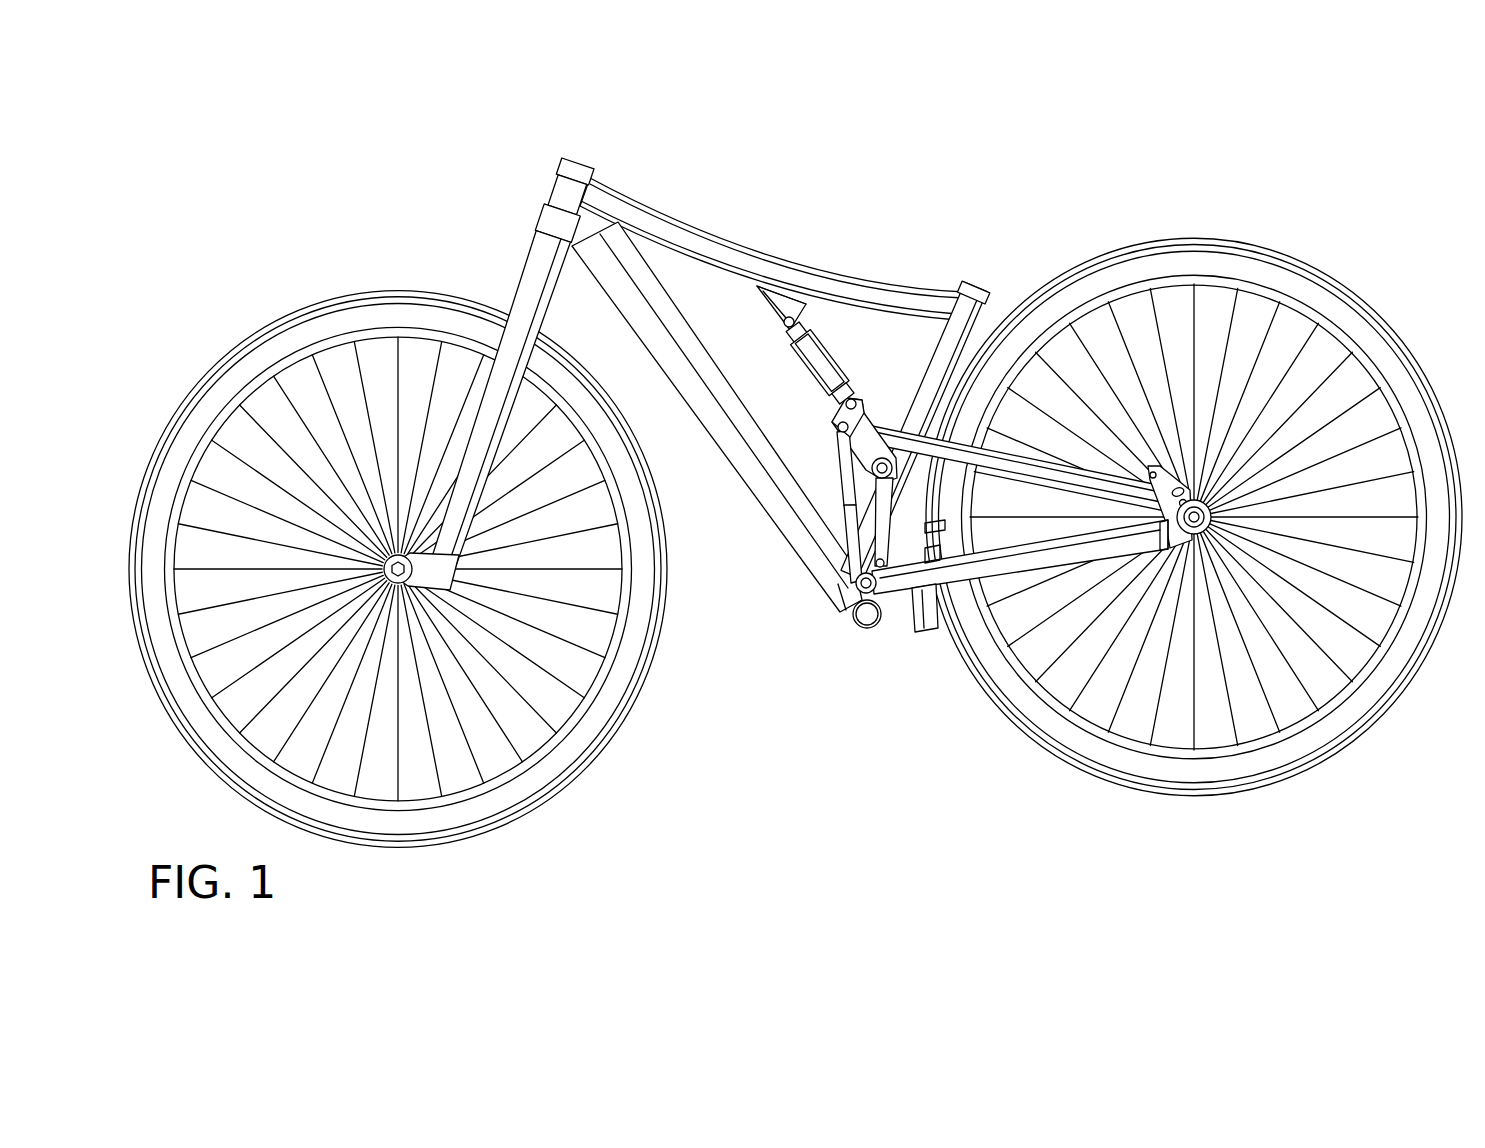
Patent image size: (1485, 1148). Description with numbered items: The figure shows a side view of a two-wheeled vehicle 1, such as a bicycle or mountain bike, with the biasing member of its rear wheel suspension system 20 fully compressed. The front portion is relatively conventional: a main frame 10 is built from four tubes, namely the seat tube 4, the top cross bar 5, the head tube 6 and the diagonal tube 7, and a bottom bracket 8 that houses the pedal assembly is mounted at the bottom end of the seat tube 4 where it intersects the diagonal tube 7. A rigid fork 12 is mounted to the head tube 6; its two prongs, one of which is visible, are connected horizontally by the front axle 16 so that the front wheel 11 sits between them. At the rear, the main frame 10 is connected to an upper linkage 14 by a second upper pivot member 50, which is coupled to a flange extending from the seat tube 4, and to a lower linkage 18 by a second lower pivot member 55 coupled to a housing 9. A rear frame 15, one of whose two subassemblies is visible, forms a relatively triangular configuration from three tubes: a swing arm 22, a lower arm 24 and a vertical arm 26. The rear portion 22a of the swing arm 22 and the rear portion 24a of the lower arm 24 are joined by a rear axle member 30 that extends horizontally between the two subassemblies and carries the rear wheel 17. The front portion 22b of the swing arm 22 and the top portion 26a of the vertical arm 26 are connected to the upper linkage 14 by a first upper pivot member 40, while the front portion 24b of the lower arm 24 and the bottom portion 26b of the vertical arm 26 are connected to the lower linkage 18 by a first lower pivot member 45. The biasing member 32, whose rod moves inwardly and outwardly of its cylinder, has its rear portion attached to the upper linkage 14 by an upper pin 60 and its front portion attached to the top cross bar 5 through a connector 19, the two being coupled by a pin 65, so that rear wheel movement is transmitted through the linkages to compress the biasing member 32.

The two-wheeled vehicle 1 is at (580, 866).
The seat tube 4 is at (975, 282).
The top cross bar 5 is at (662, 212).
The head tube 6 is at (558, 172).
The diagonal tube 7 is at (720, 390).
The bottom bracket 8 is at (857, 642).
The housing 9 is at (838, 584).
The main frame 10 is at (514, 205).
The front wheel 11 is at (508, 775).
The fork 12 is at (520, 292).
The upper linkage 14 is at (824, 404).
The rear frame 15 is at (1100, 454).
The front axle 16 is at (378, 565).
The rear wheel 17 is at (1194, 516).
The lower linkage 18 is at (893, 642).
The connector 19 is at (757, 286).
The rear wheel suspension system 20 is at (1194, 524).
The swing arm 22 is at (1048, 440).
The rear portion of swing arm 22a is at (1160, 472).
The front portion of swing arm 22b is at (870, 438).
The lower arm 24 is at (1046, 567).
The rear portion of lower arm 24a is at (1168, 548).
The front portion of lower arm 24b is at (925, 548).
The vertical arm 26 is at (779, 506).
The top portion of vertical arm 26a is at (828, 478).
The bottom portion of vertical arm 26b is at (836, 530).
The rear axle member 30 is at (1218, 514).
The biasing member 32 is at (812, 352).
The first upper pivot member 40 is at (836, 430).
The first lower pivot member 45 is at (855, 618).
The second upper pivot member 50 is at (893, 466).
The second lower pivot member 55 is at (925, 523).
The upper pin 60 is at (862, 398).
The pin 65 is at (802, 303).